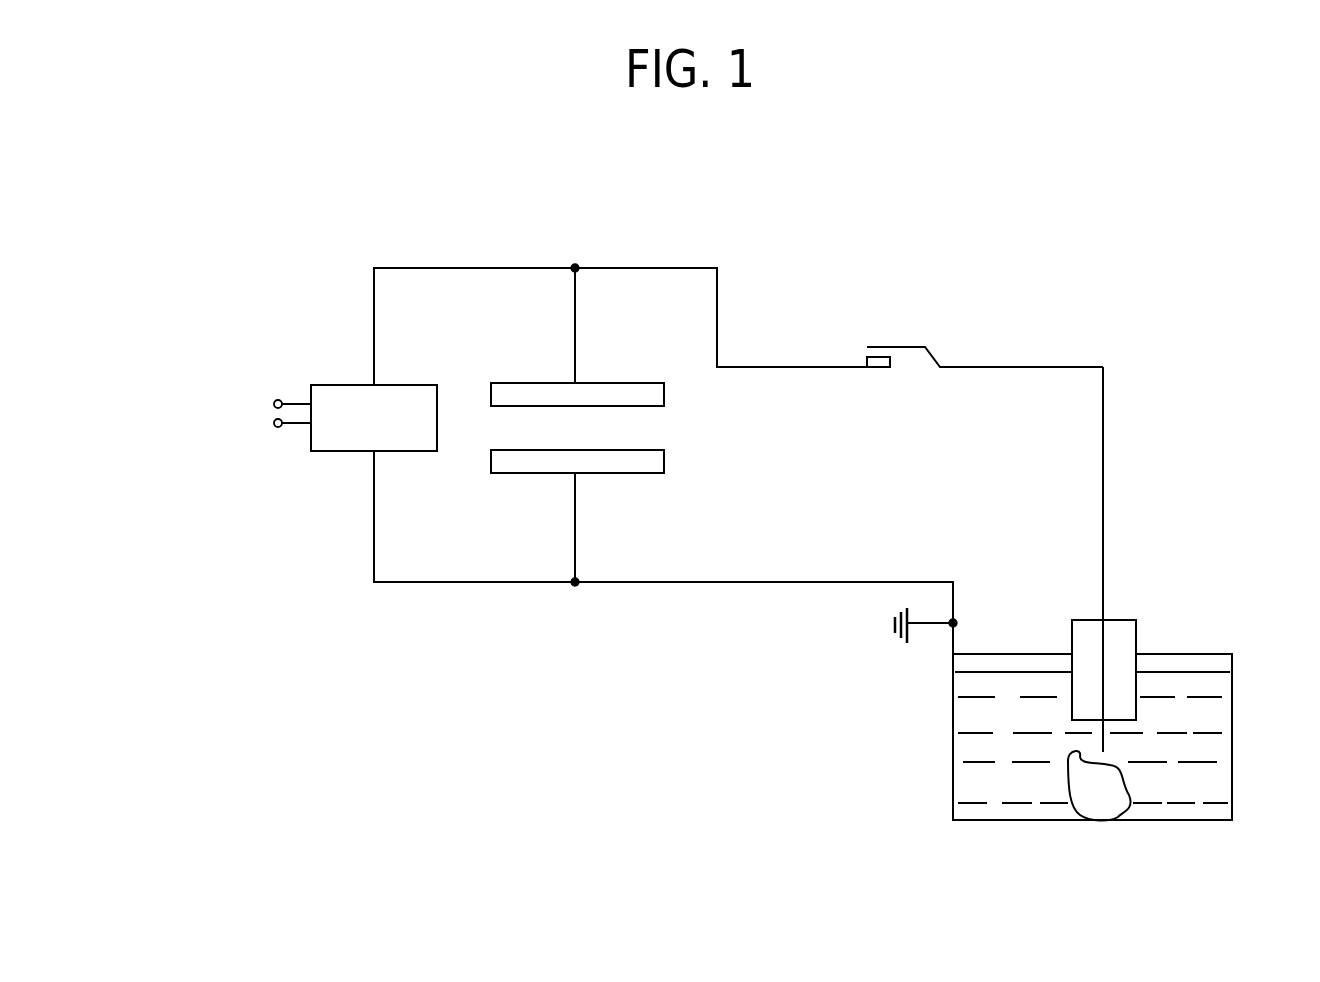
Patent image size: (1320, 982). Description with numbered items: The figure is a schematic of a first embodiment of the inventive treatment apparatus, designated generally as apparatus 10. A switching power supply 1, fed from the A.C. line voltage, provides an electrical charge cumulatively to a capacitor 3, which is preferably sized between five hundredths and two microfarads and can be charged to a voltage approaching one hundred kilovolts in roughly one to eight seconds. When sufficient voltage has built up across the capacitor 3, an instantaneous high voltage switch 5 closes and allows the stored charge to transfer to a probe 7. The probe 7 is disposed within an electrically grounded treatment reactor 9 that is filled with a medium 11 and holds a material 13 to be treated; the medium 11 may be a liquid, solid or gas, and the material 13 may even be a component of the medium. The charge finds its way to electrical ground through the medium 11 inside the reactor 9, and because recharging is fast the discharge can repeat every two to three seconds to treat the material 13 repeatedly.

The switching power supply 1 is at (322, 483).
The capacitor 3 is at (605, 373).
The instantaneous high voltage switch 5 is at (915, 330).
The probe 7 is at (1123, 618).
The treatment reactor 9 is at (1232, 683).
The apparatus 10 is at (1162, 378).
The medium 11 is at (1222, 718).
The material to be treated 13 is at (1102, 805).